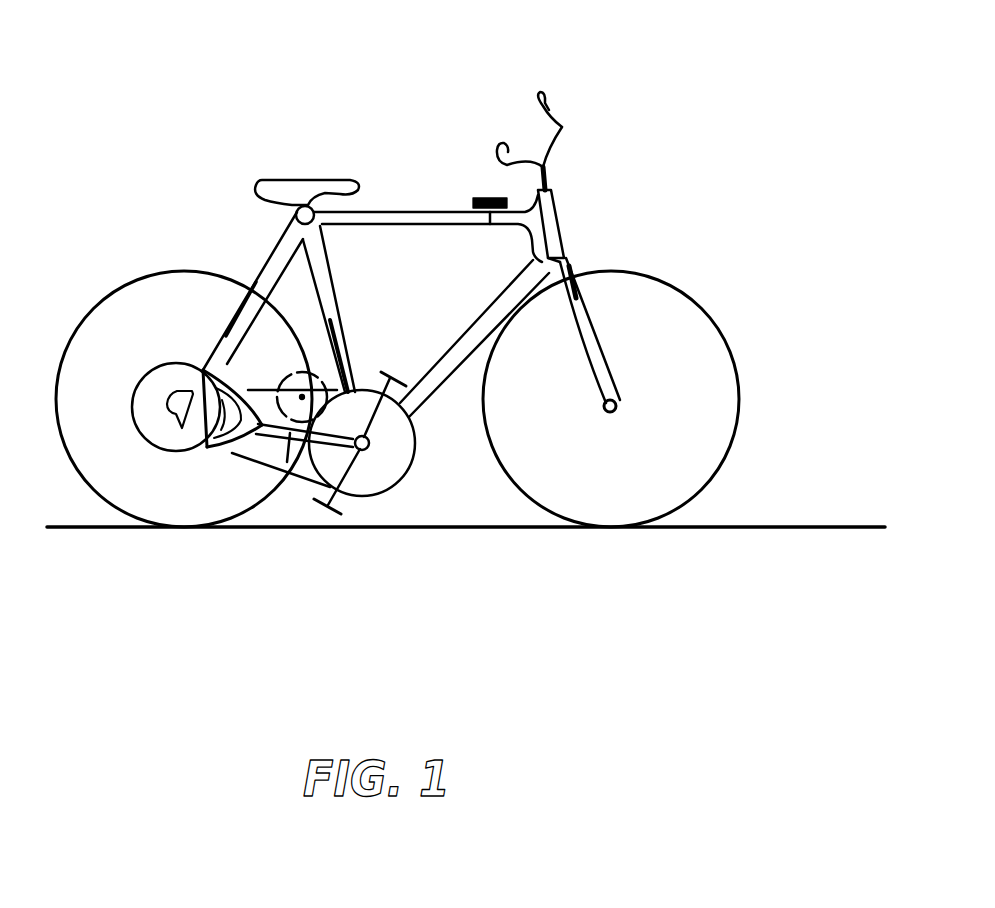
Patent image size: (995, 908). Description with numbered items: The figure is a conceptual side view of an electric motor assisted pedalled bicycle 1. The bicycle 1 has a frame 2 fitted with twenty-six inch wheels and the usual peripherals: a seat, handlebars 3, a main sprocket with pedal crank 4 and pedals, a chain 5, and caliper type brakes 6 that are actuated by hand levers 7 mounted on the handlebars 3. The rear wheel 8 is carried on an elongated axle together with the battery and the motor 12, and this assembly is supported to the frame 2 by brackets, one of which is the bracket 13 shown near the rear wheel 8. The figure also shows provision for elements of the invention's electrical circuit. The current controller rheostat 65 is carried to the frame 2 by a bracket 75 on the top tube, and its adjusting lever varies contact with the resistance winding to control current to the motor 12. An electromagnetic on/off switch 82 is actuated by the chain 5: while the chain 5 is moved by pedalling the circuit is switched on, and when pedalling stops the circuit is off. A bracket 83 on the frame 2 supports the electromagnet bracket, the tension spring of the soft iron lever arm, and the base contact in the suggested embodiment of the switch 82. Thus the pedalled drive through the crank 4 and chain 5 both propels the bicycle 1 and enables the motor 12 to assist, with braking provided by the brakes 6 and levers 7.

The bicycle 1 is at (577, 210).
The frame 2 is at (450, 374).
The handlebars 3 is at (562, 127).
The main sprocket with pedal crank 4 is at (398, 493).
The chain 5 is at (267, 455).
The caliper type brakes 6 is at (581, 269).
The hand levers 7 is at (547, 102).
The rear wheel 8 is at (103, 503).
The motor 12 is at (185, 453).
The bracket 13 is at (205, 369).
The current controller rheostat 65 is at (466, 184).
The bracket 75 is at (491, 225).
The on/off switch 82 is at (312, 351).
The bracket 83 is at (352, 345).